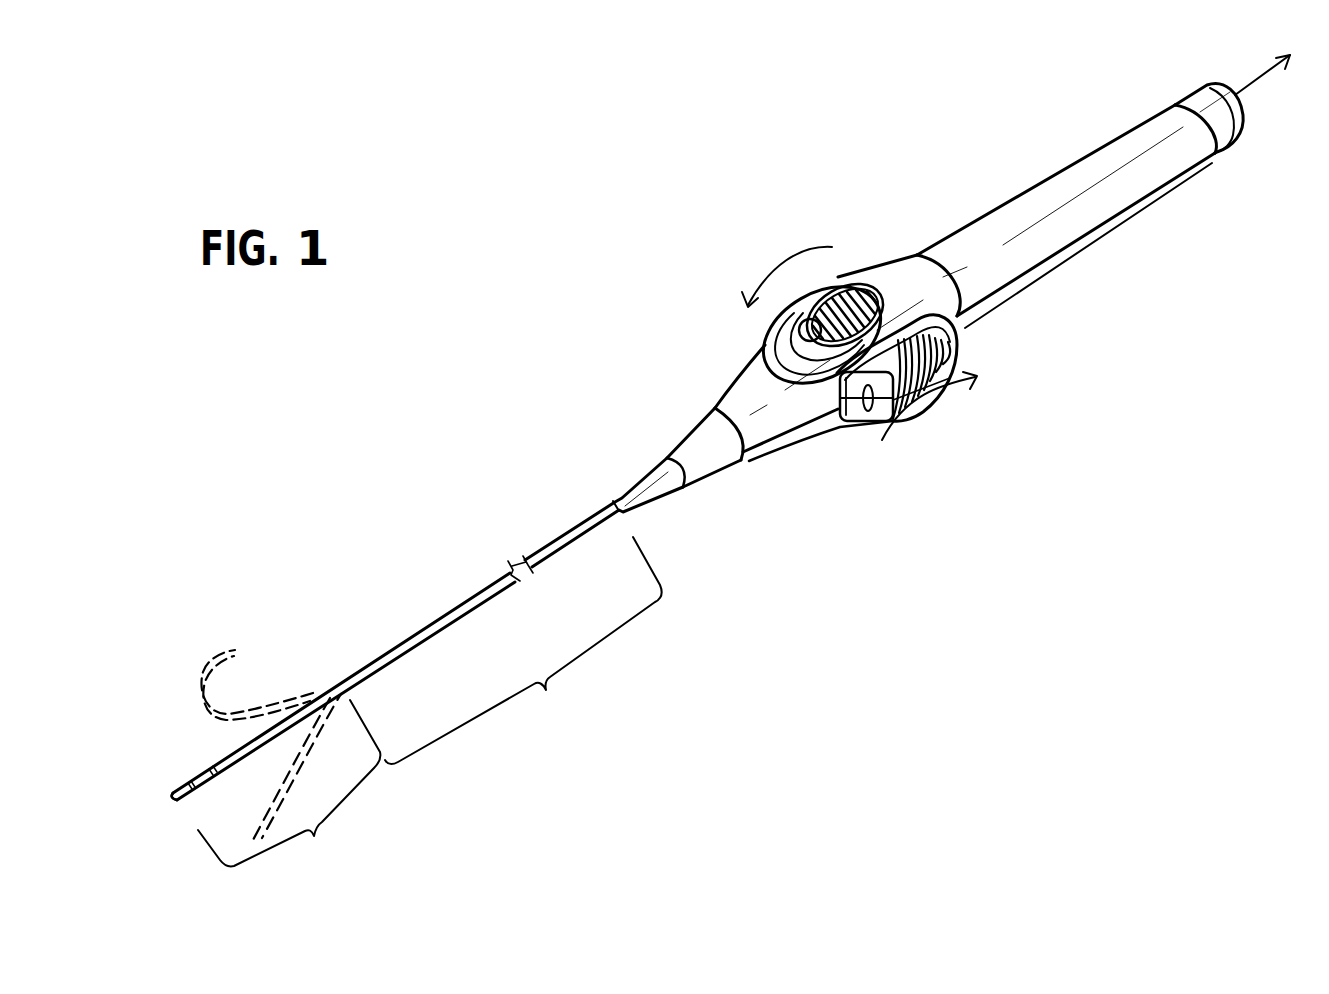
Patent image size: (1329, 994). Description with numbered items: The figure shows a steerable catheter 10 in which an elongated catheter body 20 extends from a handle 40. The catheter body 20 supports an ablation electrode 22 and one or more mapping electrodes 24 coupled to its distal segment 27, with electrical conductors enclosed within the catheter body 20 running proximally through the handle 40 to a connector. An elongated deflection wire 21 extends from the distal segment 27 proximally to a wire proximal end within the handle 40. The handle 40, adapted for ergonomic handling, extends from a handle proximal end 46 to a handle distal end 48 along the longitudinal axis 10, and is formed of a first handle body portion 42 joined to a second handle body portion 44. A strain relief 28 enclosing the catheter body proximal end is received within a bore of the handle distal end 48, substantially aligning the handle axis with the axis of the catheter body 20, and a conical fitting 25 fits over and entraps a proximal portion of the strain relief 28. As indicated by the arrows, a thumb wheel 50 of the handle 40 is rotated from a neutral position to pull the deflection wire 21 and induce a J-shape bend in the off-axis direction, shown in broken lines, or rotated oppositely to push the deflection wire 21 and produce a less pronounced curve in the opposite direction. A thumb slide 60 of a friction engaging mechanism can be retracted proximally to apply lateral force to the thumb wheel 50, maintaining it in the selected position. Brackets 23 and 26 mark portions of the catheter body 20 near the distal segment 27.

The steerable catheter 10 is at (1258, 72).
The catheter body 20 is at (405, 603).
The deflection wire 21 is at (525, 585).
The ablation electrode 22 is at (185, 778).
The intermediate shaft portion 23 is at (523, 650).
The mapping electrode 24 is at (200, 753).
The conical fitting 25 is at (696, 440).
The deflected distal portion 26 is at (180, 803).
The distal segment 27 is at (289, 783).
The strain relief 28 is at (620, 512).
The handle 40 is at (995, 352).
The first handle body portion 42 is at (985, 200).
The second handle body portion 44 is at (1074, 263).
The handle proximal end 46 is at (1245, 152).
The handle distal end 48 is at (686, 490).
The thumb wheel 50 is at (900, 415).
The thumb slide 60 is at (845, 280).